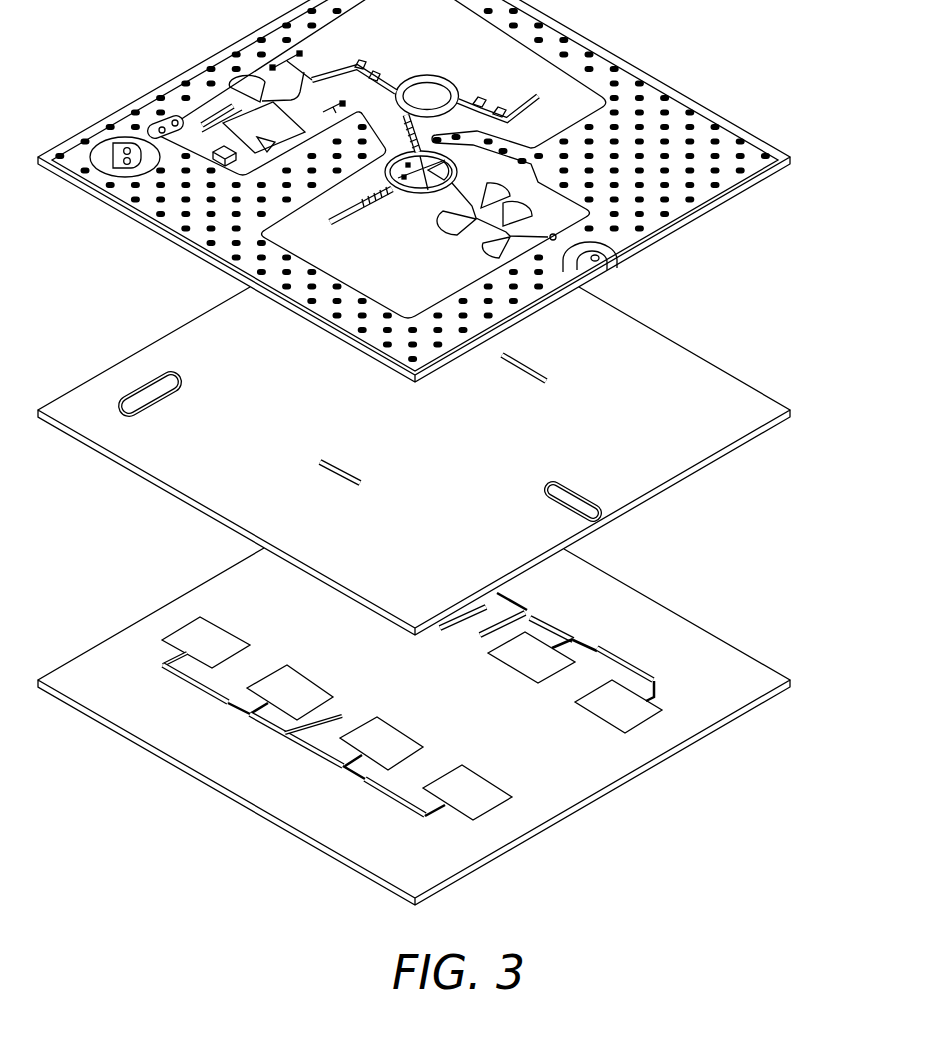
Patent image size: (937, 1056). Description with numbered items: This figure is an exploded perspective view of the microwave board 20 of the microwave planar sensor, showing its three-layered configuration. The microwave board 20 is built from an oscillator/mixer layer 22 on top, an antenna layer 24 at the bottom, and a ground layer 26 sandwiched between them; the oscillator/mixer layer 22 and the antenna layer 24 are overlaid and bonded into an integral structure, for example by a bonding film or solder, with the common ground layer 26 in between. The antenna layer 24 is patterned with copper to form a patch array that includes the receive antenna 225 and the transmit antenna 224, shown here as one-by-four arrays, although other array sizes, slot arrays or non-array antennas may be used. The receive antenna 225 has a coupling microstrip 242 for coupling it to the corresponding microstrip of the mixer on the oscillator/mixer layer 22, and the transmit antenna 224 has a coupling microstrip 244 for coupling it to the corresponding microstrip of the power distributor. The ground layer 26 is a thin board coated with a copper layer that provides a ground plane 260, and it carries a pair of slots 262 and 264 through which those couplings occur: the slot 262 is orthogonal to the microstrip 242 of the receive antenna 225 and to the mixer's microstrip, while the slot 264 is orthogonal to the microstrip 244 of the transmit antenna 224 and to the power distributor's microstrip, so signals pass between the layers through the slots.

The microwave board 20 is at (816, 46).
The oscillator/mixer layer 22 is at (706, 118).
The antenna layer 24 is at (417, 726).
The ground layer 26 is at (403, 461).
The transmit antenna 224 is at (647, 672).
The receive antenna 225 is at (481, 788).
The coupling microstrip 242 is at (295, 742).
The coupling microstrip 244 is at (526, 609).
The ground plane 260 is at (73, 400).
The slot 262 is at (344, 470).
The slot 264 is at (530, 364).